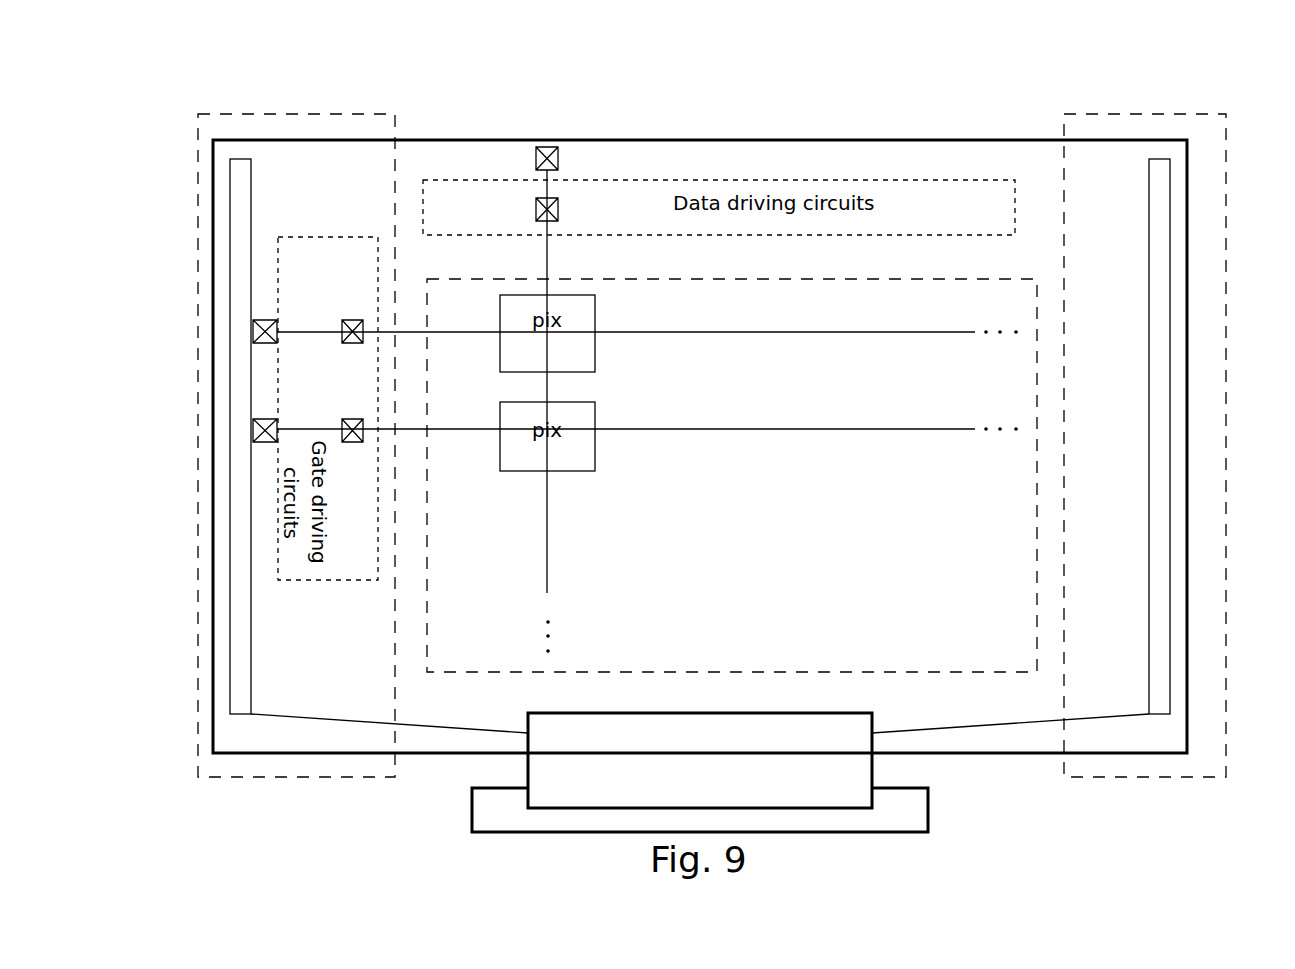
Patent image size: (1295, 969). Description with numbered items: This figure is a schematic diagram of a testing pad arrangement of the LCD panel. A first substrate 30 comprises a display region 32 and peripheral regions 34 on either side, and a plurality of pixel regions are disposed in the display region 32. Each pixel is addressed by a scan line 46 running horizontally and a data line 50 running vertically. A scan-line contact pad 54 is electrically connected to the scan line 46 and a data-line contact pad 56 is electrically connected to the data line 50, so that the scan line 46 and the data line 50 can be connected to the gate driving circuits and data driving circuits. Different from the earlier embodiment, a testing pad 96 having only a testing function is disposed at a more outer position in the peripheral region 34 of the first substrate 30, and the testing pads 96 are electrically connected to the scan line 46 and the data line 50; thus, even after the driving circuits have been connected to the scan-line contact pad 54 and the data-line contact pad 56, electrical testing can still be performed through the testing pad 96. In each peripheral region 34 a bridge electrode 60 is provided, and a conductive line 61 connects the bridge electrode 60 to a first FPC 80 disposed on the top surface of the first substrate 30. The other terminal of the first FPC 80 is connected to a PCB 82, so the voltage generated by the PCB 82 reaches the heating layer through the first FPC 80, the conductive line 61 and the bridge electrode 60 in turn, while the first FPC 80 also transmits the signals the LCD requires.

The first substrate 30 is at (940, 97).
The display region 32 is at (932, 672).
The peripheral region 34 is at (235, 114).
The scan line 46 is at (708, 428).
The data line 50 is at (547, 548).
The scan-line contact pad 54 is at (352, 320).
The data-line contact pad 56 is at (550, 198).
The bridge electrode 60 is at (242, 640).
The conductive line 61 is at (292, 718).
The first FPC 80 is at (700, 760).
The PCB 82 is at (497, 812).
The testing pad 96 is at (548, 147).